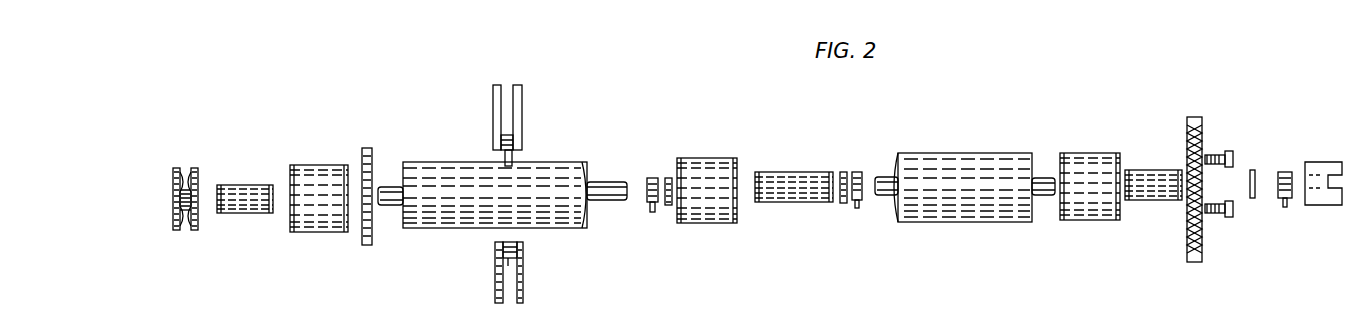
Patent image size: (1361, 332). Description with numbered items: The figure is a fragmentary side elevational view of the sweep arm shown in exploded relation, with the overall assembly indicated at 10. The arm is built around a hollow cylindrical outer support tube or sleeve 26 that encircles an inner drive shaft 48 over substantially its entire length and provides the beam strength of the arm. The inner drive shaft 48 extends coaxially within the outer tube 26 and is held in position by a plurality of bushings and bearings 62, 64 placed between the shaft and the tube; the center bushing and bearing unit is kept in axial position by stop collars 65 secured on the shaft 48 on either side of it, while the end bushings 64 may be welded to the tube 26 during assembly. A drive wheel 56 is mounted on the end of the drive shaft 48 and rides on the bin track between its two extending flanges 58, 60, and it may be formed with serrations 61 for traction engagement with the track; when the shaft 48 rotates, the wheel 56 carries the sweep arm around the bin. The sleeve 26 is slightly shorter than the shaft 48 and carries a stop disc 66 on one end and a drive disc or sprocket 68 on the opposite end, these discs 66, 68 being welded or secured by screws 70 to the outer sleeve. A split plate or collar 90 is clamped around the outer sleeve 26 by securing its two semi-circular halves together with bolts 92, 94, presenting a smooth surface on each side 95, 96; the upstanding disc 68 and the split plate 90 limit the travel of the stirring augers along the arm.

The main roller 10 is at (552, 140).
The outer support tube or sleeve 26 is at (888, 218).
The inner drive shaft 48 is at (611, 198).
The drive wheel 56 is at (185, 177).
The flange 58 is at (173, 178).
The flange 60 is at (198, 177).
The serrations 61 is at (175, 217).
The bushing 62 is at (248, 213).
The bearing 64 is at (308, 165).
The stop collar 65 is at (650, 177).
The stop disc 66 is at (375, 151).
The drive disc or sprocket 68 is at (1200, 124).
The screw 70 is at (1233, 152).
The split plate or collar 90 is at (497, 246).
The bolt 92 is at (508, 133).
The bolt 94 is at (506, 262).
The side of split plate 95 is at (523, 290).
The side of split plate 96 is at (493, 122).